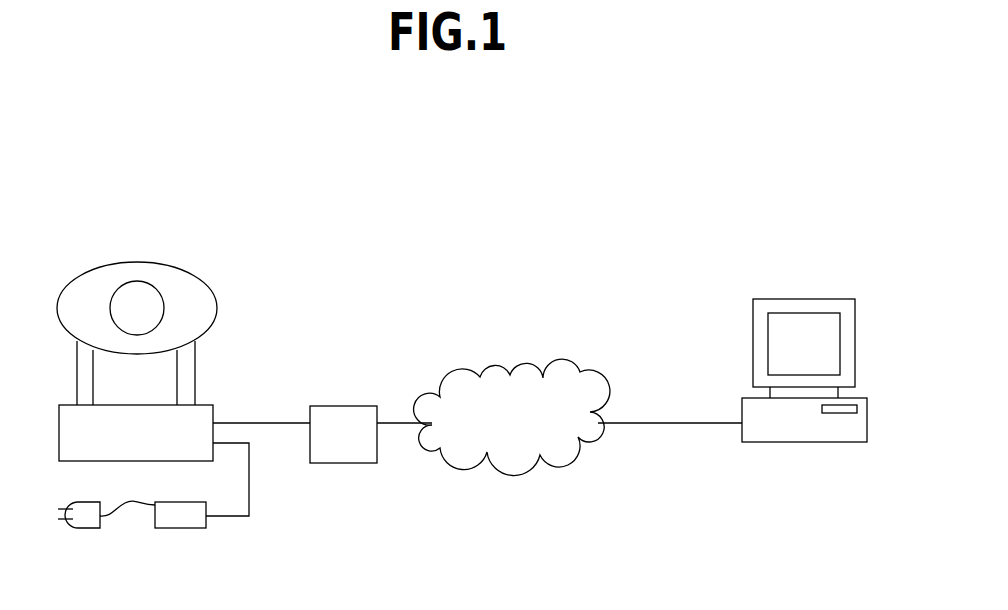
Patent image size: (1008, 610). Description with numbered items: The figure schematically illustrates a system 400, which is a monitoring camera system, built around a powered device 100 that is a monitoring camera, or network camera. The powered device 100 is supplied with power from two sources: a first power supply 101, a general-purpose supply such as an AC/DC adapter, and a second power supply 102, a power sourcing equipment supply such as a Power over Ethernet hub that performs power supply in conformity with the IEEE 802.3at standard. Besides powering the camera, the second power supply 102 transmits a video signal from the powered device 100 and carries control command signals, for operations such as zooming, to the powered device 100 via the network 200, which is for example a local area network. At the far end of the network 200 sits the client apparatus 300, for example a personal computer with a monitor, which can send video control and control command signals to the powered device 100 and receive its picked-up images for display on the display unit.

The powered device 100 is at (137, 262).
The first power supply 101 is at (177, 530).
The second power supply 102 is at (345, 405).
The network 200 is at (498, 361).
The client apparatus 300 is at (808, 298).
The system 400 is at (607, 198).